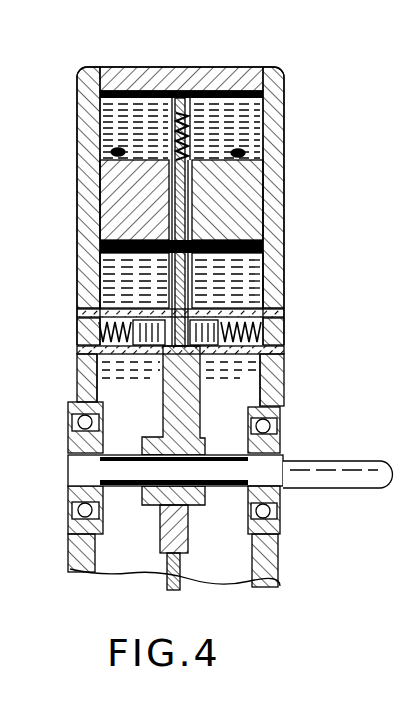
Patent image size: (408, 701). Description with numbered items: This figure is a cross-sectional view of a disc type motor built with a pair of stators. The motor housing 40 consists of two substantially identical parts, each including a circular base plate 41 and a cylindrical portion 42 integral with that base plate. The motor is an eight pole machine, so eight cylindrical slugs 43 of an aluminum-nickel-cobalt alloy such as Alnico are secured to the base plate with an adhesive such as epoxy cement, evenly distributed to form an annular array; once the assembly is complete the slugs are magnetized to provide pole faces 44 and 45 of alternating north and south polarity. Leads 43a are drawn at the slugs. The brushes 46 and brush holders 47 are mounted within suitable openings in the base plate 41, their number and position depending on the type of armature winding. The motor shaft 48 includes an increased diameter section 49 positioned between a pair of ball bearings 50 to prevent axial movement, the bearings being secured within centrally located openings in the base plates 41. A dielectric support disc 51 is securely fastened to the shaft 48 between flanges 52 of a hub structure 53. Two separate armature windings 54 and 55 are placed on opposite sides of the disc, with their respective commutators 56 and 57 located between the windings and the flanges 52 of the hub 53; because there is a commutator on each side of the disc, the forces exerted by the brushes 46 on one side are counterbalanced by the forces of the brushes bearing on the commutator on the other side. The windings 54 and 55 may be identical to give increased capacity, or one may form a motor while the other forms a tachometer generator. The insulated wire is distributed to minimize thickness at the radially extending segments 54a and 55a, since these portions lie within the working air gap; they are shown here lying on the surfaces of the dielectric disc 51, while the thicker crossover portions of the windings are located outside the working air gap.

The motor housing 40 is at (218, 58).
The circular base plate 41 is at (78, 110).
The cylindrical portion 42 is at (123, 67).
The cylindrical slugs 43 is at (145, 152).
The coil lead 43a is at (108, 152).
The pole face 44 is at (134, 280).
The pole face 45 is at (227, 280).
The brushes 46 is at (142, 328).
The brush holders 47 is at (82, 366).
The motor shaft 48 is at (346, 479).
The increased diameter section 49 is at (123, 490).
The ball bearings 50 is at (283, 454).
The dielectric support disc 51 is at (185, 94).
The flanges 52 is at (163, 406).
The hub structure 53 is at (160, 434).
The armature winding 54 is at (172, 128).
The radially extending segments 54a is at (172, 182).
The armature winding 55 is at (190, 127).
The permanent magnet S 55a is at (189, 190).
The commutator 56 is at (165, 365).
The commutator 57 is at (187, 360).